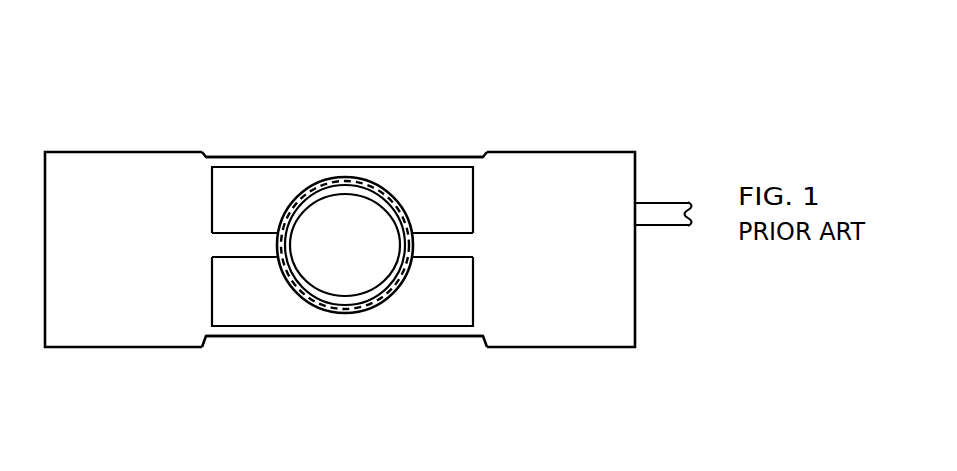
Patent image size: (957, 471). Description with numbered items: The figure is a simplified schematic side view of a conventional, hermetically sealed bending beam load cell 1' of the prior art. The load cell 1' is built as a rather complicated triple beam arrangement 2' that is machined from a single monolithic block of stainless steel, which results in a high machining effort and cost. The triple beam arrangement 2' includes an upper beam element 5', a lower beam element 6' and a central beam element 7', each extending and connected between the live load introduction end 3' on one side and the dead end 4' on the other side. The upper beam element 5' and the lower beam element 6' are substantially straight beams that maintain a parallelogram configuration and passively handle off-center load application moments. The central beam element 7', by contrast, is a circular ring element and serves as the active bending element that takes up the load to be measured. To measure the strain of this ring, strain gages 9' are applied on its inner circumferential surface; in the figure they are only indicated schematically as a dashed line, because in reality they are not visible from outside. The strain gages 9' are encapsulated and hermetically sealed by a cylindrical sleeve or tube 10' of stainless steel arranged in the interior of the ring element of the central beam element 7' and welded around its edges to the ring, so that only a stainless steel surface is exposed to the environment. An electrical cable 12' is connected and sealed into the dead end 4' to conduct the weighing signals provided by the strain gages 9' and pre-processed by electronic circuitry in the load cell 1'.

The bending beam load cell 1' is at (344, 177).
The triple beam arrangement 2' is at (345, 196).
The live load introduction end 3' is at (123, 220).
The dead end 4' is at (565, 213).
The upper beam element 5' is at (344, 121).
The lower beam element 6' is at (344, 369).
The central beam element 7' is at (332, 322).
The strain gages 9' is at (345, 262).
The cylindrical sleeve or tube 10' is at (345, 245).
The electrical cable 12' is at (663, 251).